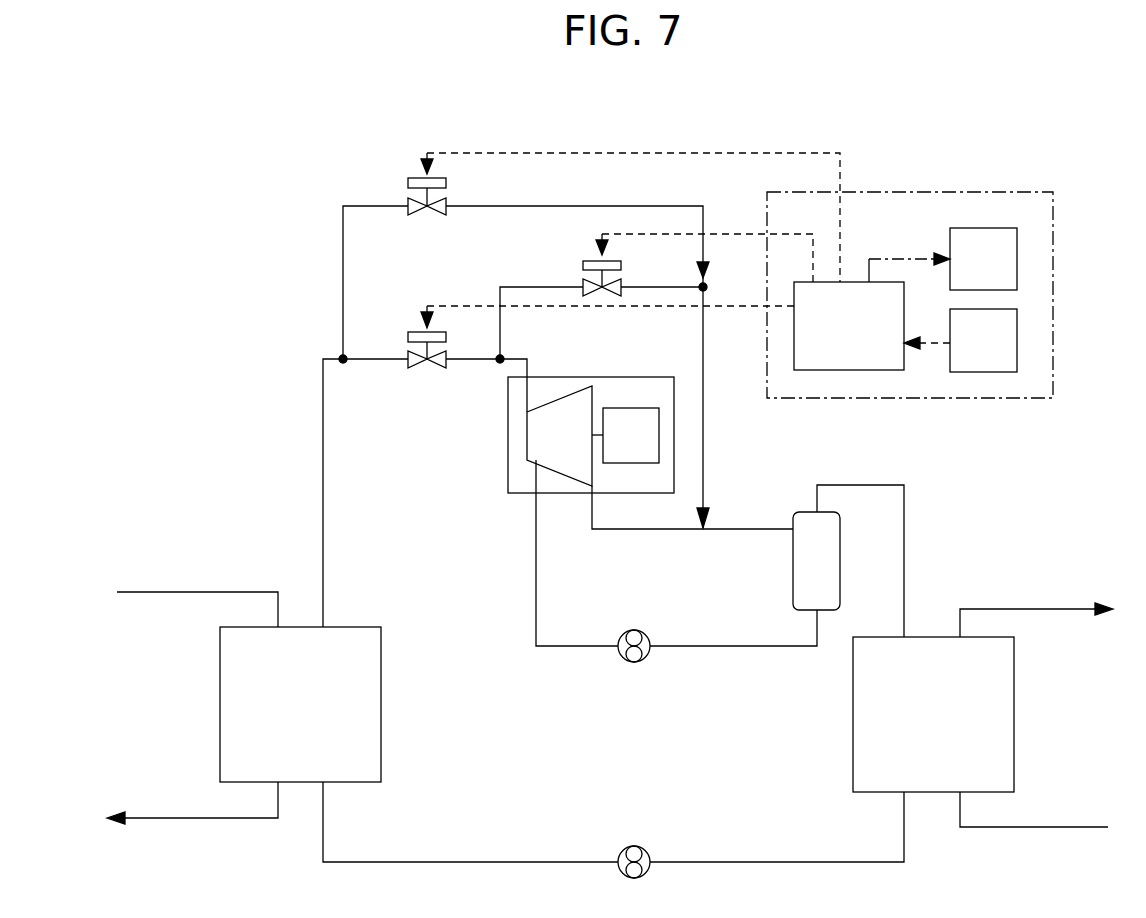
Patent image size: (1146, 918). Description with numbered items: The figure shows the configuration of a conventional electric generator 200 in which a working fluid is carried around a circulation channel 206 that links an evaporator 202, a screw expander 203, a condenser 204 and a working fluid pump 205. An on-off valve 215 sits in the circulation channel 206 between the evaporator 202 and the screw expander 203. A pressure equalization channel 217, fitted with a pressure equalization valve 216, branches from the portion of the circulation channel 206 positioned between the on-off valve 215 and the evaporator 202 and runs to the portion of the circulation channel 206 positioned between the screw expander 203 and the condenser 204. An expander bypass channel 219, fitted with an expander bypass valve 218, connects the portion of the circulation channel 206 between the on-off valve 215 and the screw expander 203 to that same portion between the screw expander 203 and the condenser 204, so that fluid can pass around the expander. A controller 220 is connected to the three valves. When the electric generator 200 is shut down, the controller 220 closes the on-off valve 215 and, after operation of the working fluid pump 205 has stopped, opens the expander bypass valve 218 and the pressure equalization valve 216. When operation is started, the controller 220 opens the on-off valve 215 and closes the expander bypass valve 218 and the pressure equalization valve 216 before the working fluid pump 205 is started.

The electric generator 200 is at (890, 113).
The evaporator 202 is at (220, 663).
The screw expander 203 is at (527, 450).
The condenser 204 is at (853, 690).
The working fluid pump 205 is at (634, 846).
The circulation channel 206 is at (323, 493).
The on-off valve 215 is at (415, 365).
The pressure equalization valve 216 is at (417, 214).
The pressure equalization channel 217 is at (458, 208).
The expander bypass valve 218 is at (583, 252).
The expander bypass channel 219 is at (567, 285).
The controller 220 is at (943, 192).